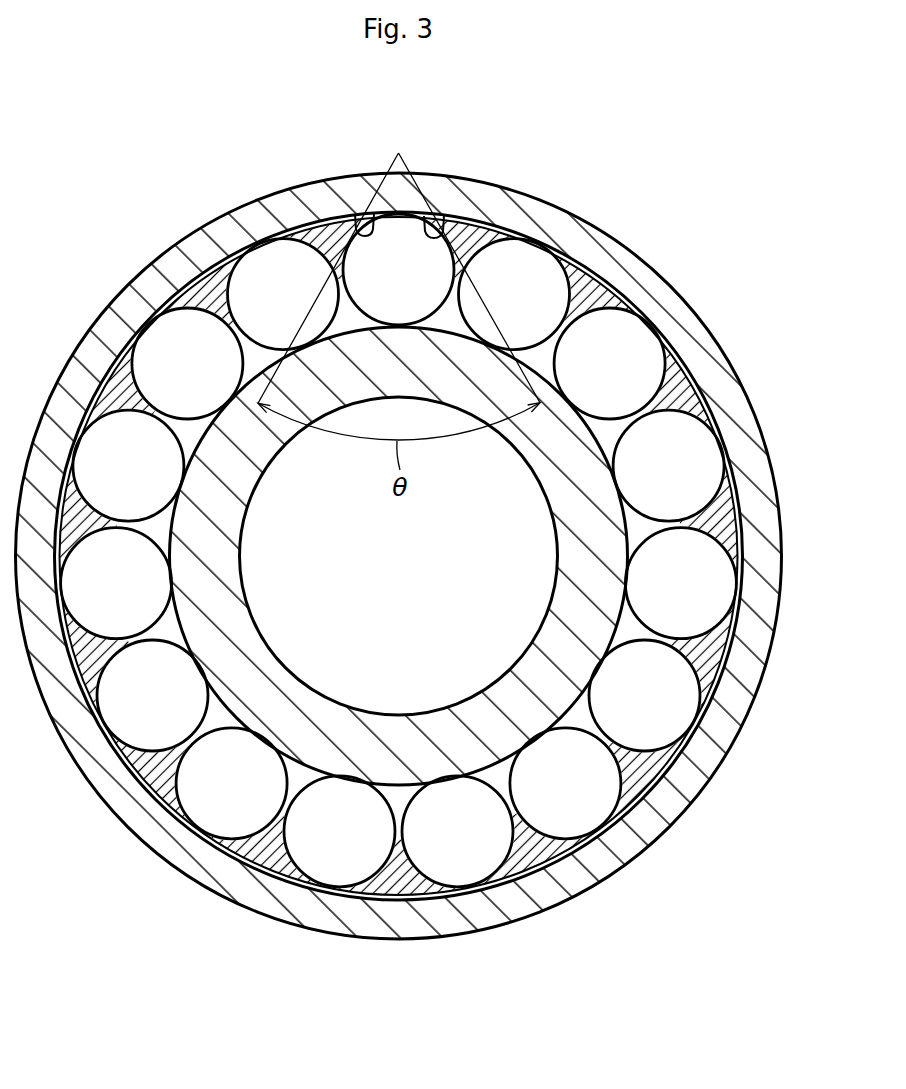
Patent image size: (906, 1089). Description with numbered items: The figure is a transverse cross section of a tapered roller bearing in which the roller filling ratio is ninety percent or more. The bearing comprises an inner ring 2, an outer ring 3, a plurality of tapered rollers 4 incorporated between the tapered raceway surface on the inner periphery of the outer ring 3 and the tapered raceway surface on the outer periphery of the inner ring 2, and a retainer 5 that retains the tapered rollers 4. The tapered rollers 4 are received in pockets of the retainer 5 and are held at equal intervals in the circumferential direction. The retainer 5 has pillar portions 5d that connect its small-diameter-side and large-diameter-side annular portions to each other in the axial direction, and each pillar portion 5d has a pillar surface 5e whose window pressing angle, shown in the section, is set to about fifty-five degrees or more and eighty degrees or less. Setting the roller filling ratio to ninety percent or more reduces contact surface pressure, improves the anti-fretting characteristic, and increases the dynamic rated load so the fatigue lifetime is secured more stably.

The inner ring 2 is at (577, 507).
The outer ring 3 is at (613, 258).
The tapered rollers 4 is at (280, 282).
The retainer 5 is at (190, 283).
The pillar portions 5d is at (693, 375).
The pillar surface 5e is at (362, 215).